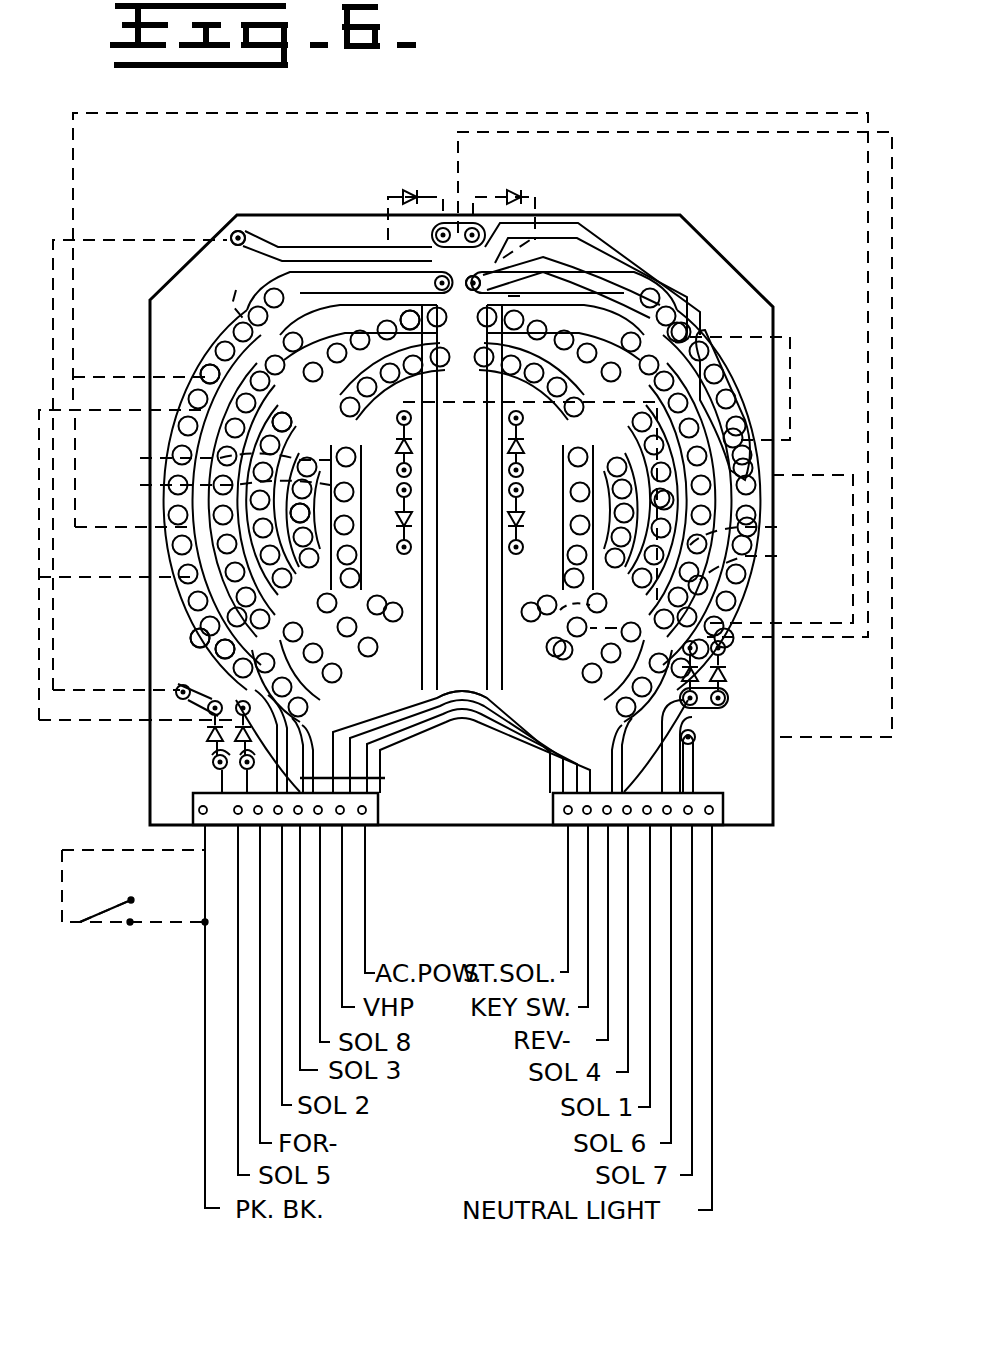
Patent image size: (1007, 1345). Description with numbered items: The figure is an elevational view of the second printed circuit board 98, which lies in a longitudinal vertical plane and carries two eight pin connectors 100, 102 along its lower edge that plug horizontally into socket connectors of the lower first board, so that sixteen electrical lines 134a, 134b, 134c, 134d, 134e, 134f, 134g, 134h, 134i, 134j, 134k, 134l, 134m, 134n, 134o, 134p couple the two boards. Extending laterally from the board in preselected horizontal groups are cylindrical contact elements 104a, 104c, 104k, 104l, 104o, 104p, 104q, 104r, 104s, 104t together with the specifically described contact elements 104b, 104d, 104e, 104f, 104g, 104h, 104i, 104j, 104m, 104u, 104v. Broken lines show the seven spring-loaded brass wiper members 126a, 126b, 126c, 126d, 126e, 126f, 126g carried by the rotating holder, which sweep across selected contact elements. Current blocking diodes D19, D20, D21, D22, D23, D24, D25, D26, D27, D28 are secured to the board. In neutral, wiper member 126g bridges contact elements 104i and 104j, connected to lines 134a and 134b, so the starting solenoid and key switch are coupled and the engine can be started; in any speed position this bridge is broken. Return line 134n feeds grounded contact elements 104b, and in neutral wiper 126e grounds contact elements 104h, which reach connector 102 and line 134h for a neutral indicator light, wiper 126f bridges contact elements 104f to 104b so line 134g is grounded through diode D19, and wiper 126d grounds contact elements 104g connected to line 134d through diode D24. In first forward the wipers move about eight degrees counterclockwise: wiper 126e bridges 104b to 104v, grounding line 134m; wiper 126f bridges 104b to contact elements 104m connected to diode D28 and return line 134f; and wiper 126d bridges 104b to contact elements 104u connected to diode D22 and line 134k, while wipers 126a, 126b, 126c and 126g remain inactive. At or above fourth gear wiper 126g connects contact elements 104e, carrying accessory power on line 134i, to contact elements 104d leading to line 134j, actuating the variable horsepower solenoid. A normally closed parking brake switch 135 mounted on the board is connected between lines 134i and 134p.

The second printed circuit board 98 is at (700, 238).
The eight pin connector 100 is at (193, 808).
The eight pin connector 102 is at (722, 808).
The contact elements 104a is at (128, 720).
The contact elements 104b is at (228, 660).
The contact elements 104c is at (372, 795).
The contact elements 104d is at (320, 727).
The contact elements 104e is at (408, 312).
The contact elements 104f is at (198, 640).
The contact elements 104g is at (332, 673).
The contact elements 104h is at (284, 434).
The contact elements 104i is at (565, 767).
The contact elements 104j is at (610, 780).
The contact elements 104k is at (553, 800).
The contact elements 104l is at (650, 765).
The contact elements 104m is at (212, 366).
The contact elements 104o is at (698, 608).
The contact elements 104p is at (730, 565).
The contact elements 104q is at (746, 470).
The contact elements 104r is at (685, 318).
The contact elements 104s is at (660, 498).
The contact elements 104t is at (573, 654).
The contact elements 104u is at (300, 522).
The contact elements 104v is at (348, 665).
The wiper member 126a is at (793, 526).
The wiper member 126b is at (796, 554).
The wiper member 126c is at (620, 622).
The wiper member 126d is at (157, 483).
The wiper member 126e is at (150, 457).
The wiper member 126f is at (212, 267).
The wiper member 126g is at (528, 294).
The electrical line 134a is at (568, 883).
The electrical line 134b is at (588, 908).
The electrical line 134c is at (608, 938).
The electrical line 134d is at (628, 967).
The electrical line 134e is at (650, 1002).
The return line 134f is at (671, 1025).
The electrical line 134g is at (692, 1060).
The electrical line 134h is at (712, 1093).
The electrical line 134i is at (365, 882).
The electrical line 134j is at (342, 910).
The electrical line 134k is at (320, 947).
The electrical line 134l is at (300, 963).
The electrical line 134m is at (282, 993).
The return line 134n is at (260, 1023).
The electrical line 134o is at (238, 1057).
The electrical line 134p is at (205, 1103).
The parking brake switch 135 is at (108, 932).
The current blocking diode D19 is at (415, 190).
The diode D20 is at (516, 190).
The diode D21 is at (414, 443).
The current blocking diode D22 is at (422, 512).
The diode D23 is at (508, 446).
The current blocking diode D24 is at (510, 520).
The diode D25 is at (212, 730).
The diode D26 is at (236, 700).
The diode D27 is at (682, 678).
The current blocking diode D28 is at (735, 670).